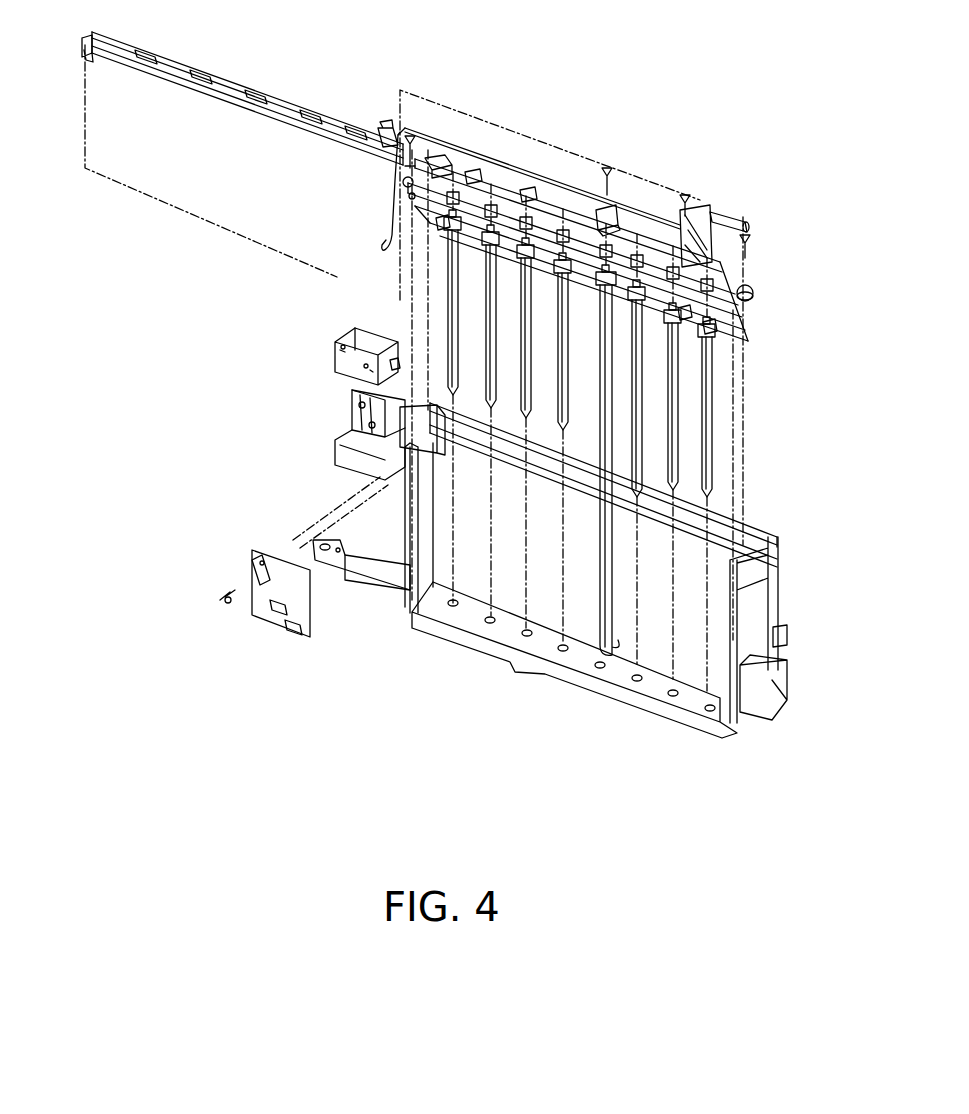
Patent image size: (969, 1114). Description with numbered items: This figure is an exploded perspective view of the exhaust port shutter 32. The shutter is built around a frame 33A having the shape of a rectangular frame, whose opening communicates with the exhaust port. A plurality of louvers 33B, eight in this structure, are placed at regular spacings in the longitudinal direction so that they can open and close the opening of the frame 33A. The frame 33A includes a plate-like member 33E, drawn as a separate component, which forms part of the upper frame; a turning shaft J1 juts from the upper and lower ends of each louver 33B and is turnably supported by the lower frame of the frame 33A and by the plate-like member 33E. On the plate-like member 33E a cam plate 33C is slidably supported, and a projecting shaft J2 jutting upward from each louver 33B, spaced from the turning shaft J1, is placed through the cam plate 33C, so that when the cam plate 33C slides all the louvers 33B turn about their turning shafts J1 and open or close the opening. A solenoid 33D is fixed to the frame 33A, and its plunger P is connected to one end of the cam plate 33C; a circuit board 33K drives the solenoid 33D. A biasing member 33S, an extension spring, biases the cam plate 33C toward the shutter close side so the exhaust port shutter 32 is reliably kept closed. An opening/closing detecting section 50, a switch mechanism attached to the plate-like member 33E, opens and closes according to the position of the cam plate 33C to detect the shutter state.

The exhaust port shutter 32 is at (592, 106).
The frame 33A is at (783, 597).
The louvers 33B is at (488, 390).
The cam plate 33C is at (263, 97).
The solenoid 33D is at (335, 340).
The plate-like member 33E is at (757, 287).
The circuit board 33K is at (250, 560).
The biasing member 33S is at (733, 210).
The opening/closing detecting section 50 is at (697, 207).
The turning shaft J1 is at (456, 192).
The projecting shaft J2 is at (440, 223).
The plunger P is at (395, 345).